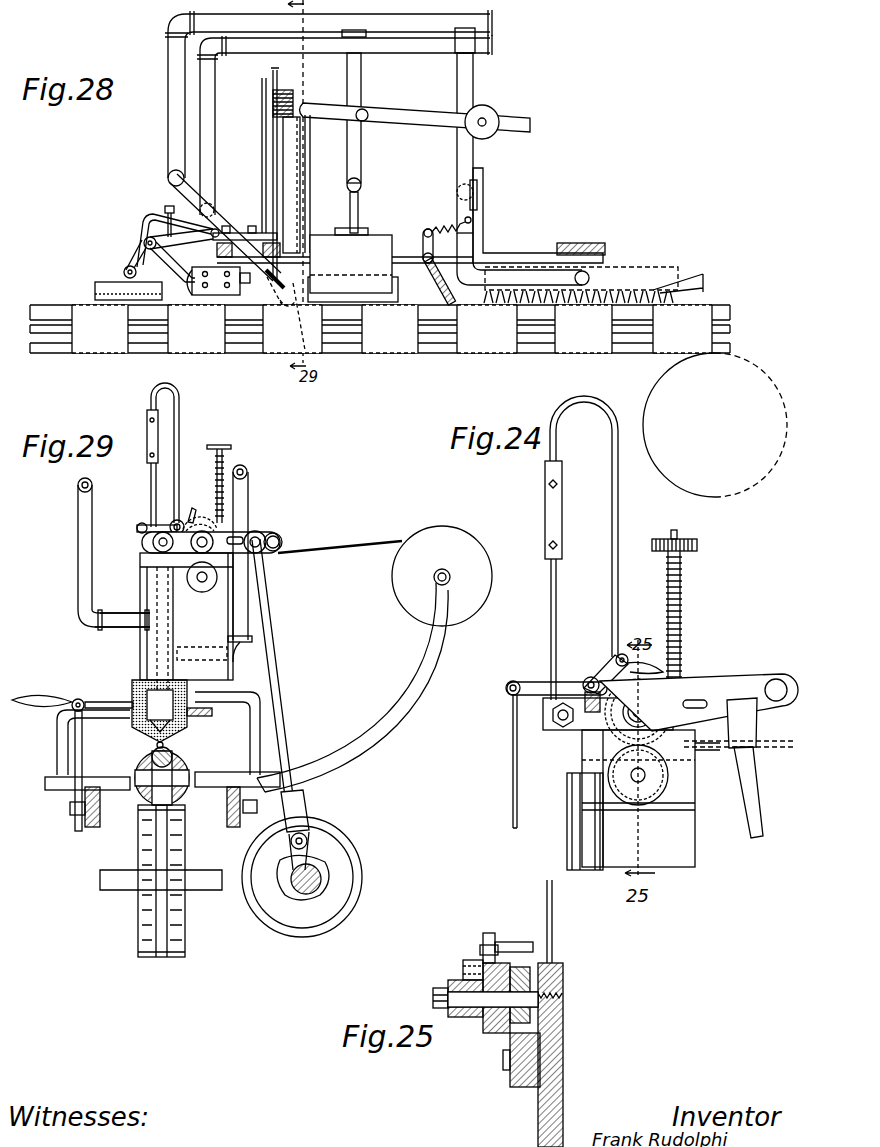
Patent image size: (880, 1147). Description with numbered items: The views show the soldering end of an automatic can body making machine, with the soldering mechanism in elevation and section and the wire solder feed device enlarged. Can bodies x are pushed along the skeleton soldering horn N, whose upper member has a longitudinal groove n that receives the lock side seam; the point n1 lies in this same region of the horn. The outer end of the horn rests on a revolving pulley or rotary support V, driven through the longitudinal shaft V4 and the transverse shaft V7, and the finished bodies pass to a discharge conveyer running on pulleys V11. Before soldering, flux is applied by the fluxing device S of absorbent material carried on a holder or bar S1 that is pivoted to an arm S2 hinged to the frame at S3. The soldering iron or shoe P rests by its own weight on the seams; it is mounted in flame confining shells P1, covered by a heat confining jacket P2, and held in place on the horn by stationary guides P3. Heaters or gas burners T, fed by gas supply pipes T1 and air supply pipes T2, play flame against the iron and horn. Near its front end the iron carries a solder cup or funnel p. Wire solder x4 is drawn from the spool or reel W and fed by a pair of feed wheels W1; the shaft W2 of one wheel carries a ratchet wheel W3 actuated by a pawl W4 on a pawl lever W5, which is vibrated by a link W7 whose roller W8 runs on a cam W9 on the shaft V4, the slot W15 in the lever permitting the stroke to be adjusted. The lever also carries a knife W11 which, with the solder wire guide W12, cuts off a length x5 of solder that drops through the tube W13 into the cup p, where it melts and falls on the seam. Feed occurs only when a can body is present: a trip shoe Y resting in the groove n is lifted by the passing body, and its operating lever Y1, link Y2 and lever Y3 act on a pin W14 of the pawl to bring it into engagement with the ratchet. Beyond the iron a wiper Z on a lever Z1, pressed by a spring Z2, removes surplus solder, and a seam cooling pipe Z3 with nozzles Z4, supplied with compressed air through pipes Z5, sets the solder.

In FIG. 28, the soldering horn N is at (53, 307).
In FIG. 28, the cross blocks / valve x is at (388, 331).
In FIG. 29, the cross blocks / valve x is at (180, 790).
In FIG. 28, the air supply pipes T2 is at (170, 102).
In FIG. 29, the air supply pipes T2 is at (76, 527).
In FIG. 28, the gas supply pipes T1 is at (380, 86).
In FIG. 29, the gas supply pipes T1 is at (242, 605).
In FIG. 28, the heaters T is at (262, 272).
In FIG. 29, the heaters T is at (110, 690).
In FIG. 28, the lever Y3 is at (277, 81).
In FIG. 29, the lever Y3 is at (143, 527).
In FIG. 24, the lever Y3 is at (527, 678).
In FIG. 25, the lever Y3 is at (515, 952).
In FIG. 28, the link Y2 is at (270, 160).
In FIG. 29, the link Y2 is at (137, 638).
In FIG. 24, the link Y2 is at (508, 748).
In FIG. 28, the operating lever Y1 is at (272, 293).
In FIG. 28, the wire solder feed trip device Y is at (213, 298).
In FIG. 28, the ratchet wheel W3 is at (273, 100).
In FIG. 29, the ratchet wheel W3 is at (220, 515).
In FIG. 24, the ratchet wheel W3 is at (735, 683).
In FIG. 25, the ratchet wheel W3 is at (493, 1032).
In FIG. 28, the guide tube W13 is at (298, 149).
In FIG. 29, the guide tube W13 is at (163, 602).
In FIG. 24, the guide tube W13 is at (578, 840).
In FIG. 28, the soldering iron P is at (322, 298).
In FIG. 29, the soldering iron P is at (170, 713).
In FIG. 28, the flame confining chamber P1 is at (337, 284).
In FIG. 29, the flame confining chamber P1 is at (132, 712).
In FIG. 29, the heat confining jacket P2 is at (204, 690).
In FIG. 29, the stationary guides P3 is at (109, 706).
In FIG. 28, the fluxing device S is at (110, 293).
In FIG. 28, the holder bar S1 is at (142, 288).
In FIG. 28, the arm S2 is at (135, 250).
In FIG. 28, the hinge S3 is at (181, 218).
In FIG. 28, the wiper Z is at (446, 281).
In FIG. 28, the lever Z1 is at (424, 247).
In FIG. 28, the spring Z2 is at (438, 229).
In FIG. 28, the seam cooling device Z3 is at (620, 272).
In FIG. 28, the nozzles Z4 is at (675, 290).
In FIG. 28, the supply pipes Z5 is at (505, 277).
In FIG. 29, the pin W14 is at (190, 508).
In FIG. 24, the pin W14 is at (622, 664).
In FIG. 25, the pin W14 is at (510, 942).
In FIG. 29, the solder wire spool W is at (442, 576).
In FIG. 29, the wire solder feed wheels W1 is at (262, 572).
In FIG. 24, the wire solder feed wheels W1 is at (660, 700).
In FIG. 25, the wire solder feed wheels W1 is at (530, 978).
In FIG. 24, the feed wheel shaft W2 is at (627, 724).
In FIG. 25, the feed wheel shaft W2 is at (468, 998).
In FIG. 24, the pawl W4 is at (617, 660).
In FIG. 25, the pawl W4 is at (483, 937).
In FIG. 29, the pawl lever W5 is at (273, 527).
In FIG. 24, the pawl lever W5 is at (793, 666).
In FIG. 25, the pawl lever W5 is at (463, 982).
In FIG. 29, the link W7 is at (284, 721).
In FIG. 24, the link W7 is at (760, 806).
In FIG. 29, the roller W8 is at (312, 838).
In FIG. 29, the cam W9 is at (364, 872).
In FIG. 29, the knife W11 is at (147, 547).
In FIG. 24, the knife W11 is at (582, 740).
In FIG. 29, the solder wire guide W12 is at (167, 558).
In FIG. 24, the solder wire guide W12 is at (642, 718).
In FIG. 24, the slot W15 is at (784, 702).
In FIG. 29, the wire solder x4 is at (340, 531).
In FIG. 24, the wire solder x4 is at (749, 762).
In FIG. 25, the wire solder x4 is at (563, 1031).
In FIG. 29, the cut length of solder x5 is at (147, 690).
In FIG. 29, the rotary support V is at (158, 955).
In FIG. 24, the rotary support V is at (762, 505).
In FIG. 29, the longitudinal shaft V4 is at (306, 886).
In FIG. 29, the transverse shaft V7 is at (210, 878).
In FIG. 29, the pulleys V11 is at (182, 957).
In FIG. 29, the solder cup p is at (215, 708).
In FIG. 29, the groove n is at (175, 752).
In FIG. 29, the nozzle opening n1 is at (148, 765).